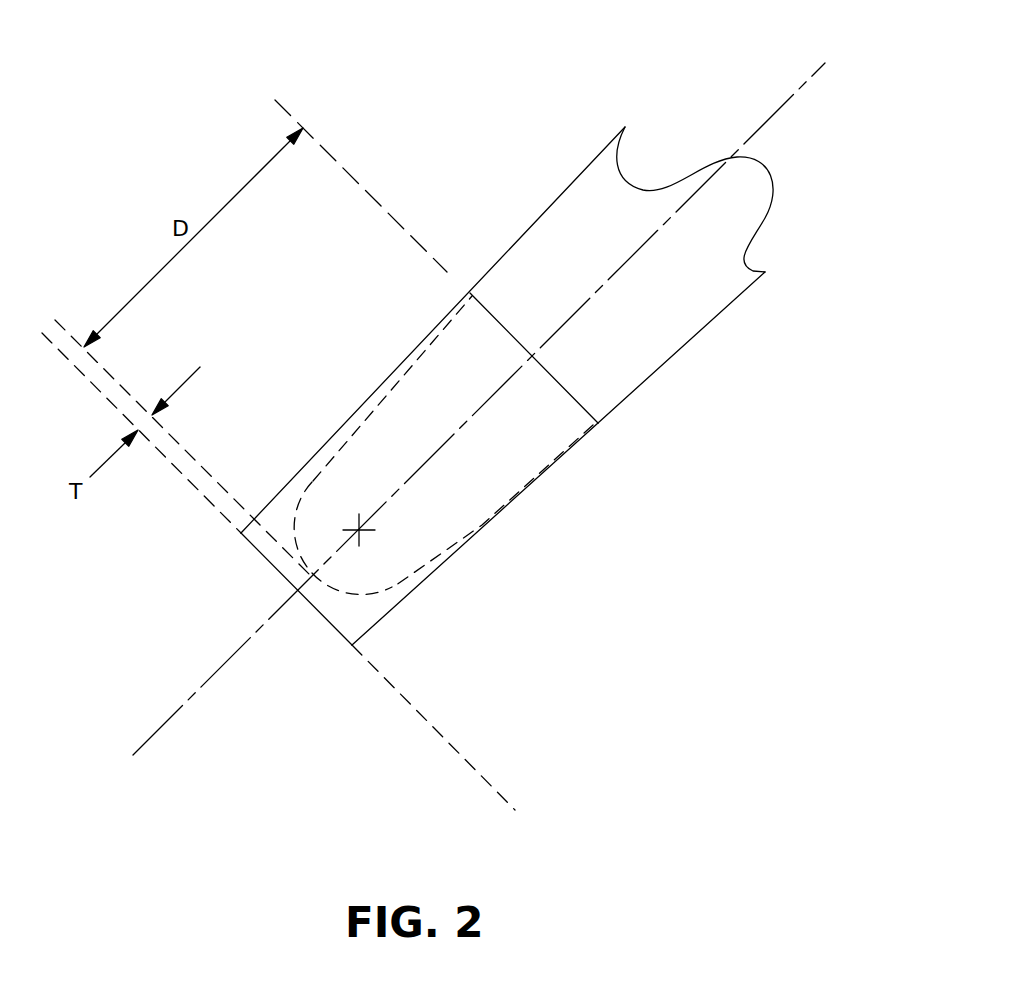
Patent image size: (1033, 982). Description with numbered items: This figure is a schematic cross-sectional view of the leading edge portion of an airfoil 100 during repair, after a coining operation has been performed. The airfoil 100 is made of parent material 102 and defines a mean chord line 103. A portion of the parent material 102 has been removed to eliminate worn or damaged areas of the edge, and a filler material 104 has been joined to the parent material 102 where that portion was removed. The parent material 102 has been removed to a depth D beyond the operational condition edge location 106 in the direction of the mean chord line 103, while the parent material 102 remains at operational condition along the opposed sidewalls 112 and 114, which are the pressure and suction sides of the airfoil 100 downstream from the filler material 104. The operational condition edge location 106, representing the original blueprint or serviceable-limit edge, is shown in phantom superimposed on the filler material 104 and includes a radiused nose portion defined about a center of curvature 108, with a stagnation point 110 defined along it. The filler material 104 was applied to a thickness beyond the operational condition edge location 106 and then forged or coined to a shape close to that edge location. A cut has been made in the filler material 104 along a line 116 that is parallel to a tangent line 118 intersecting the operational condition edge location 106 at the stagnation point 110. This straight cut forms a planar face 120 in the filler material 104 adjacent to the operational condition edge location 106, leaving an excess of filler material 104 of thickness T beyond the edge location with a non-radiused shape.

The airfoil 100 is at (585, 118).
The parent material 102 is at (630, 363).
The mean chord line 103 is at (793, 93).
The filler material 104 is at (553, 468).
The operational condition edge location 106 is at (490, 530).
The center of curvature 108 is at (360, 530).
The stagnation point 110 is at (310, 604).
The sidewall 112 is at (532, 230).
The sidewall 114 is at (722, 307).
The line 116 is at (496, 787).
The tangent line 118 is at (193, 456).
The planar face 120 is at (197, 509).